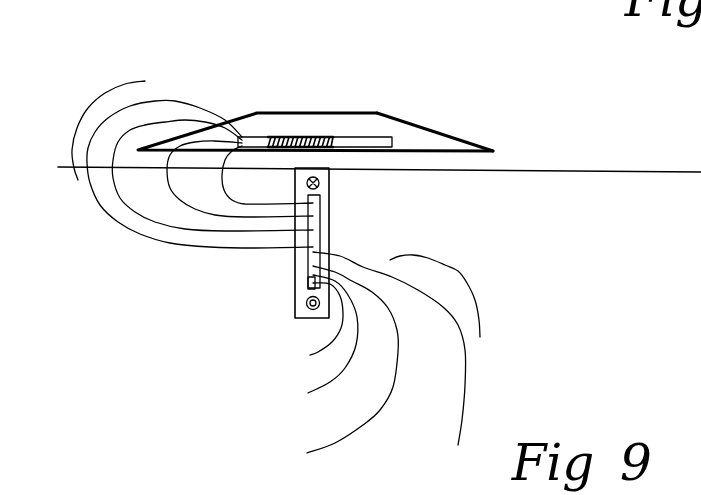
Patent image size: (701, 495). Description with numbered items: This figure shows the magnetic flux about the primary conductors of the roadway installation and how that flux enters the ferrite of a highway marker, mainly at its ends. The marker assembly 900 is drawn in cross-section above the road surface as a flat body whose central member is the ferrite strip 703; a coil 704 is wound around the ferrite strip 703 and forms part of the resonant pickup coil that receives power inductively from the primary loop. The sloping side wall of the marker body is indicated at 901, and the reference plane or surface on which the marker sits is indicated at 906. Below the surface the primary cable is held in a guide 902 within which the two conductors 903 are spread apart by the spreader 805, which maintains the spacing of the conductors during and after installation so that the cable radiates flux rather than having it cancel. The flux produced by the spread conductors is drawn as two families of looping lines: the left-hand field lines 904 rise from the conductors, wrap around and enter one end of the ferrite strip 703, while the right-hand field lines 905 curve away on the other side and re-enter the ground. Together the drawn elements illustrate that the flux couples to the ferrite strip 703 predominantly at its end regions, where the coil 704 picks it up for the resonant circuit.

The magnetic actuator assembly 900 is at (258, 60).
The ferrite core 703 is at (260, 128).
The coil 704 is at (335, 130).
The housing side wall 901 is at (462, 140).
The guide stem 902 is at (328, 198).
The lever / armature 903 is at (300, 272).
The spreader 805 is at (296, 301).
The magnetic field lines (left) 904 is at (176, 164).
The magnetic field lines (right) 905 is at (458, 271).
The reference plane / surface 906 is at (480, 165).